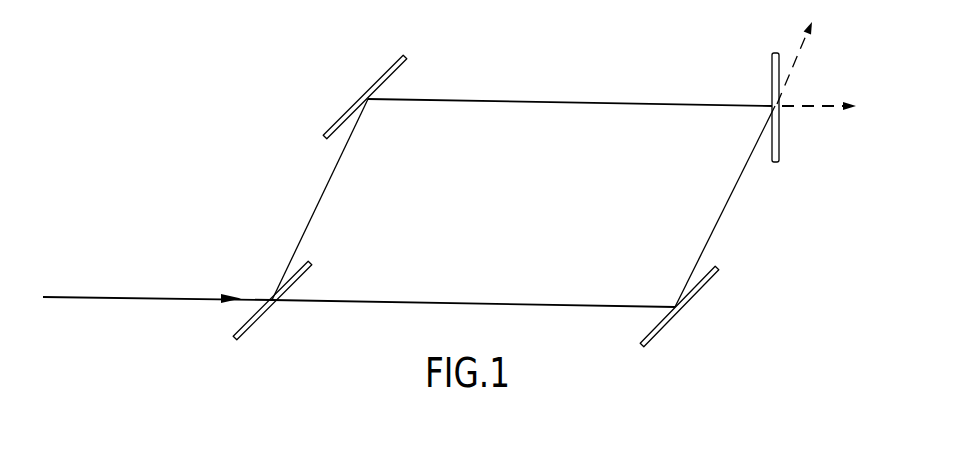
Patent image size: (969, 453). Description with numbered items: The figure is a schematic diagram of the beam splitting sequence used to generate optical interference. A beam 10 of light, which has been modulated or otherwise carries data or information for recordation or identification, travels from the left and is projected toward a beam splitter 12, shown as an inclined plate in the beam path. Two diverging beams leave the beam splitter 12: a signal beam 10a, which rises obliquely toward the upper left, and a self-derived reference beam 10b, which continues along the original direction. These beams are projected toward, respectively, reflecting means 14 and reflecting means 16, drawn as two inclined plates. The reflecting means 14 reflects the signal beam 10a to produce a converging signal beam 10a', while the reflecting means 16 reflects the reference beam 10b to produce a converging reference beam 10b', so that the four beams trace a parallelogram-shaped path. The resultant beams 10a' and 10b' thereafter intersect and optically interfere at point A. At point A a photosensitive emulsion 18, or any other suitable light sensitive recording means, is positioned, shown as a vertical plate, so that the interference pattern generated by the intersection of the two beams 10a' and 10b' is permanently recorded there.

The beam of light 10 is at (147, 299).
The beam splitter 12 is at (243, 324).
The signal beam 10a is at (318, 199).
The reflecting means 14 is at (390, 68).
The signal beam 10a' is at (570, 86).
The self-derived reference beam 10b is at (473, 318).
The reflecting means 16 is at (659, 329).
The reference beam 10b' is at (730, 206).
The photosensitive emulsion 18 is at (772, 60).
The point of intersection A is at (762, 97).